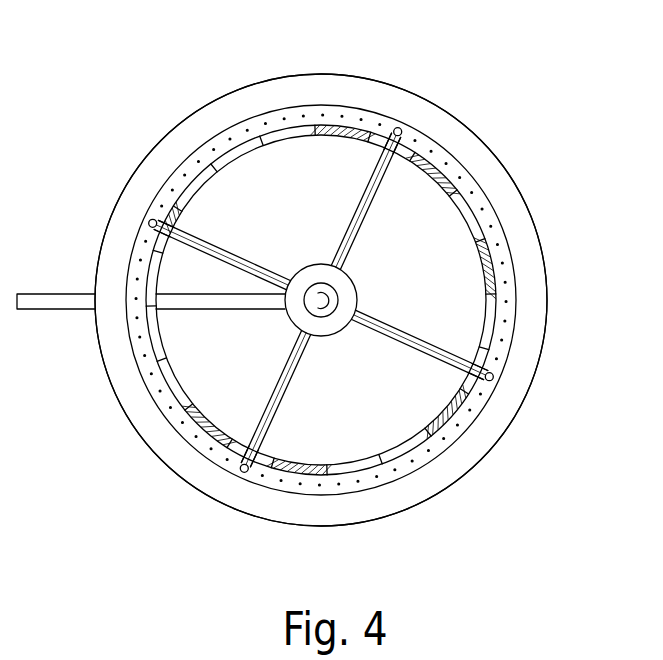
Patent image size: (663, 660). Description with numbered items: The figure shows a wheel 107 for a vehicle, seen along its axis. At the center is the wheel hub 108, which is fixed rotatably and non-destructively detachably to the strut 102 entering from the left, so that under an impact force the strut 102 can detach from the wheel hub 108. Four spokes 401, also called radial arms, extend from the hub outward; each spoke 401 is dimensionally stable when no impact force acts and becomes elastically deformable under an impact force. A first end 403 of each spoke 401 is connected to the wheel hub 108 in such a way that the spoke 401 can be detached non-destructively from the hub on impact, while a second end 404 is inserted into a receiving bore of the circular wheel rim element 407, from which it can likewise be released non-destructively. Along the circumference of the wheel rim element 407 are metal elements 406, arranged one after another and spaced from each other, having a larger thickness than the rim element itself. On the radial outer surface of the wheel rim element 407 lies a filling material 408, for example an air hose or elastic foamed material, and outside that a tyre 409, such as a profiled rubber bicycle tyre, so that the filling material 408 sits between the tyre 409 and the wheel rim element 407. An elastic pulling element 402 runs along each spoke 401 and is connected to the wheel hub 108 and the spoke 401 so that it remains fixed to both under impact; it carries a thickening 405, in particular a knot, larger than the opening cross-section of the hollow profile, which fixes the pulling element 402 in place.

The strut 102 is at (28, 303).
The wheel 107 is at (526, 120).
The wheel hub 108 is at (300, 306).
The spoke 401 is at (250, 253).
The elastic pulling element 402 is at (352, 238).
The first end 403 is at (297, 267).
The second end 404 is at (182, 225).
The thickening 405 is at (400, 128).
The metal elements 406 is at (223, 130).
The wheel rim element 407 is at (158, 413).
The filling material 408 is at (498, 245).
The tyre 409 is at (533, 302).